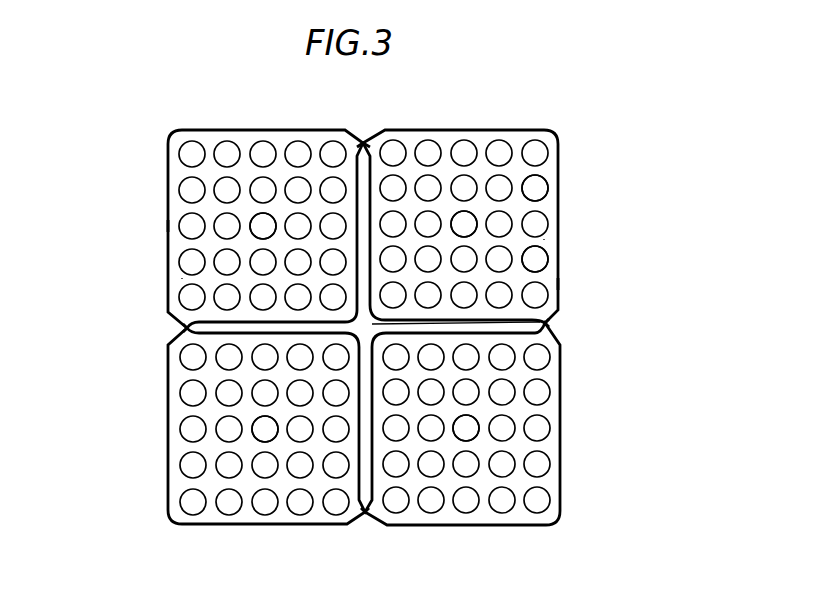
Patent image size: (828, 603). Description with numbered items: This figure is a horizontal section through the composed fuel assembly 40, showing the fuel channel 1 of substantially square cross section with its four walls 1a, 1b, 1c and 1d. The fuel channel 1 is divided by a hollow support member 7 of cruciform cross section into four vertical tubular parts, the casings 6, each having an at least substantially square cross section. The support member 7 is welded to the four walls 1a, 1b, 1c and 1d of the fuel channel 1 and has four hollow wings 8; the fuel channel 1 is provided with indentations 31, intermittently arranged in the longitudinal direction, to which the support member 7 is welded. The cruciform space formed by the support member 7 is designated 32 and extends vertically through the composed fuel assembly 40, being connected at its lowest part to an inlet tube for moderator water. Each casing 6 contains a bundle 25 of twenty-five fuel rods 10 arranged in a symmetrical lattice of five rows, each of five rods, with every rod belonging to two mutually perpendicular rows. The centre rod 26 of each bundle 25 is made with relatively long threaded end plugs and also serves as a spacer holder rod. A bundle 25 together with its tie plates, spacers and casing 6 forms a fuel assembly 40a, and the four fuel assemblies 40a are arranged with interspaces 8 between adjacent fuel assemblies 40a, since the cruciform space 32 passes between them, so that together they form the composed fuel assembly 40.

The fuel channel 1 is at (561, 377).
The wall of the fuel channel 1a is at (215, 130).
The wall of the fuel channel 1b is at (560, 216).
The wall of the fuel channel 1c is at (460, 526).
The wall of the fuel channel 1d is at (170, 392).
The casing 6 is at (560, 284).
The support member 7 is at (362, 334).
The hollow wing 8 is at (366, 140).
The fuel rod 10 is at (542, 259).
The fuel rod bundle 25 is at (542, 189).
The centre rod 26 is at (466, 222).
The indentation 31 is at (186, 327).
The cruciform space 32 is at (548, 325).
The composed fuel assembly 40 is at (606, 192).
The fuel assembly 40a is at (544, 239).